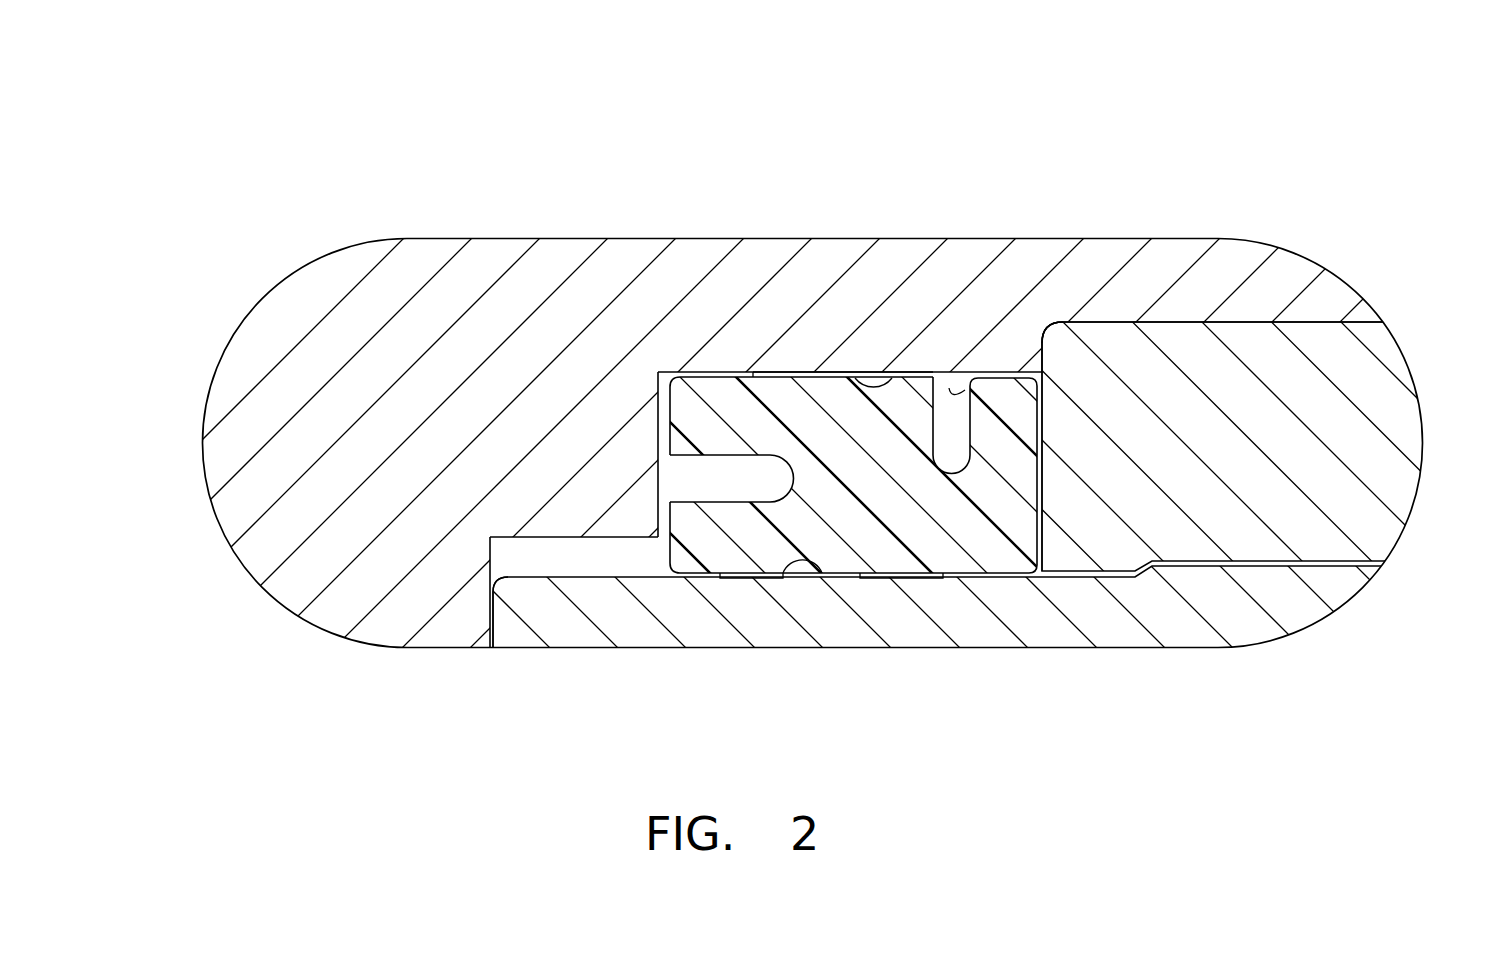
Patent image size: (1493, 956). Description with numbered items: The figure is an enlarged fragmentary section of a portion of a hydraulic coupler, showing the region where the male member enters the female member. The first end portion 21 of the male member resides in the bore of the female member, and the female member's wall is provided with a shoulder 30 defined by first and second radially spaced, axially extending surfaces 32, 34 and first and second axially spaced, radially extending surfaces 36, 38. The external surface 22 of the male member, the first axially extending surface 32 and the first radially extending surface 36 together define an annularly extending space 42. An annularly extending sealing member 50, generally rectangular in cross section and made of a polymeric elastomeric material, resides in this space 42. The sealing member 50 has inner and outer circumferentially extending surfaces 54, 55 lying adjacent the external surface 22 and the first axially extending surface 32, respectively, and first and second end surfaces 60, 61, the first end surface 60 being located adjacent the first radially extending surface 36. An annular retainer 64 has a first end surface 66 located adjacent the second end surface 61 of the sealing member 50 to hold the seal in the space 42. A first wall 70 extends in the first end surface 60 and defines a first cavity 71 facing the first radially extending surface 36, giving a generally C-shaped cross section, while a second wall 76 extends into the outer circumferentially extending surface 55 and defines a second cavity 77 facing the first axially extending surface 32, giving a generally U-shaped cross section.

The first end portion 21 is at (1002, 602).
The external surface 22 is at (818, 565).
The shoulder 30 is at (618, 468).
The first axially extending surface 32 is at (895, 372).
The second axially extending surface 34 is at (537, 537).
The first radially extending surface 36 is at (657, 427).
The second radially extending surface 38 is at (488, 620).
The annularly extending space 42 is at (949, 388).
The sealing member 50 is at (740, 418).
The inner circumferentially extending surface 54 is at (860, 572).
The outer circumferentially extending surface 55 is at (792, 372).
The first end surface 60 is at (658, 373).
The second end surface 61 is at (1045, 433).
The annular retainer 64 is at (1337, 367).
The first end surface 66 is at (1040, 360).
The first wall 70 is at (690, 455).
The first cavity 71 is at (740, 473).
The second wall 76 is at (965, 374).
The second cavity 77 is at (953, 447).